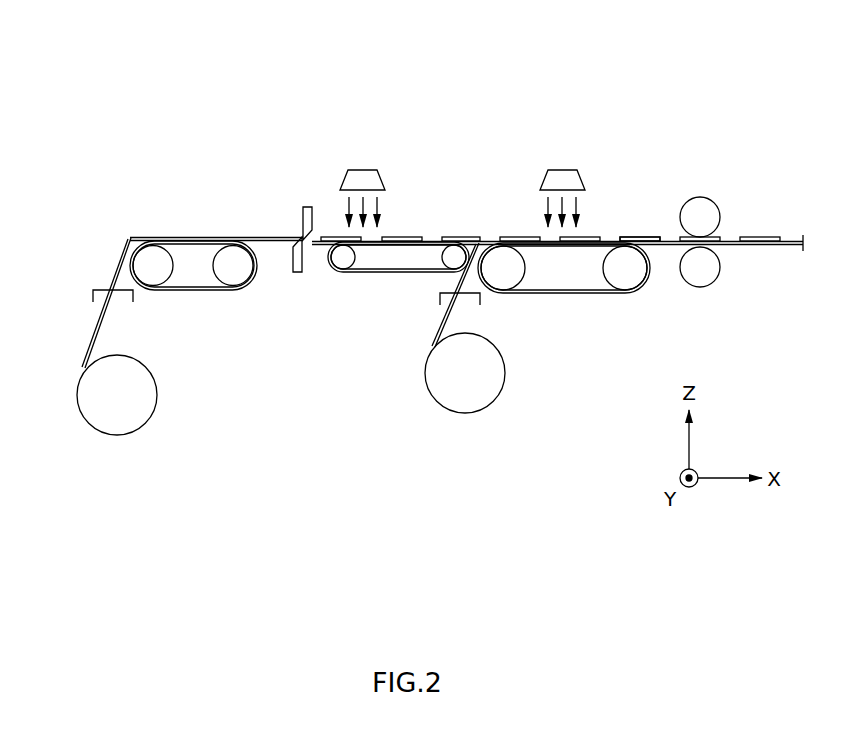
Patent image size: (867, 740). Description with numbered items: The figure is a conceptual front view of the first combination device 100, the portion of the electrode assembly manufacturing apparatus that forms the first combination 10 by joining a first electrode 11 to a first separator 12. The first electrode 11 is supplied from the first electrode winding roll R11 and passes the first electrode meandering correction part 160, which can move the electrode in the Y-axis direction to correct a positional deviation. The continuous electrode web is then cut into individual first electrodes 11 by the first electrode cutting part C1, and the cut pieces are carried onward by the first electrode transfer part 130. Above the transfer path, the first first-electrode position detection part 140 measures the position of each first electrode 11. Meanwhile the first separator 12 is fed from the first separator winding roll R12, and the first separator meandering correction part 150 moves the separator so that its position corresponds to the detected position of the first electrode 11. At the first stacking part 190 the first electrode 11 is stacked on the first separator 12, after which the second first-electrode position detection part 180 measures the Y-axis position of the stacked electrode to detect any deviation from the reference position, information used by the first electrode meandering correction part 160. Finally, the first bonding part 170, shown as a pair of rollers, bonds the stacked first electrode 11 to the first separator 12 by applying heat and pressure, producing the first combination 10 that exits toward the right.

The first combination device 100 is at (625, 34).
The first combination 10 is at (760, 235).
The first electrode 11 is at (641, 237).
The first separator 12 is at (663, 246).
The first electrode transfer part 130 is at (381, 284).
The first first-electrode position detection part 140 is at (361, 158).
The first separator meandering correction part 150 is at (480, 297).
The first electrode meandering correction part 160 is at (93, 291).
The first bonding part 170 is at (699, 190).
The second first-electrode position detection part 180 is at (560, 158).
The first stacking part 190 is at (593, 308).
The first electrode cutting part C1 is at (299, 284).
The first electrode winding roll R11 is at (118, 427).
The first separator winding roll R12 is at (463, 406).